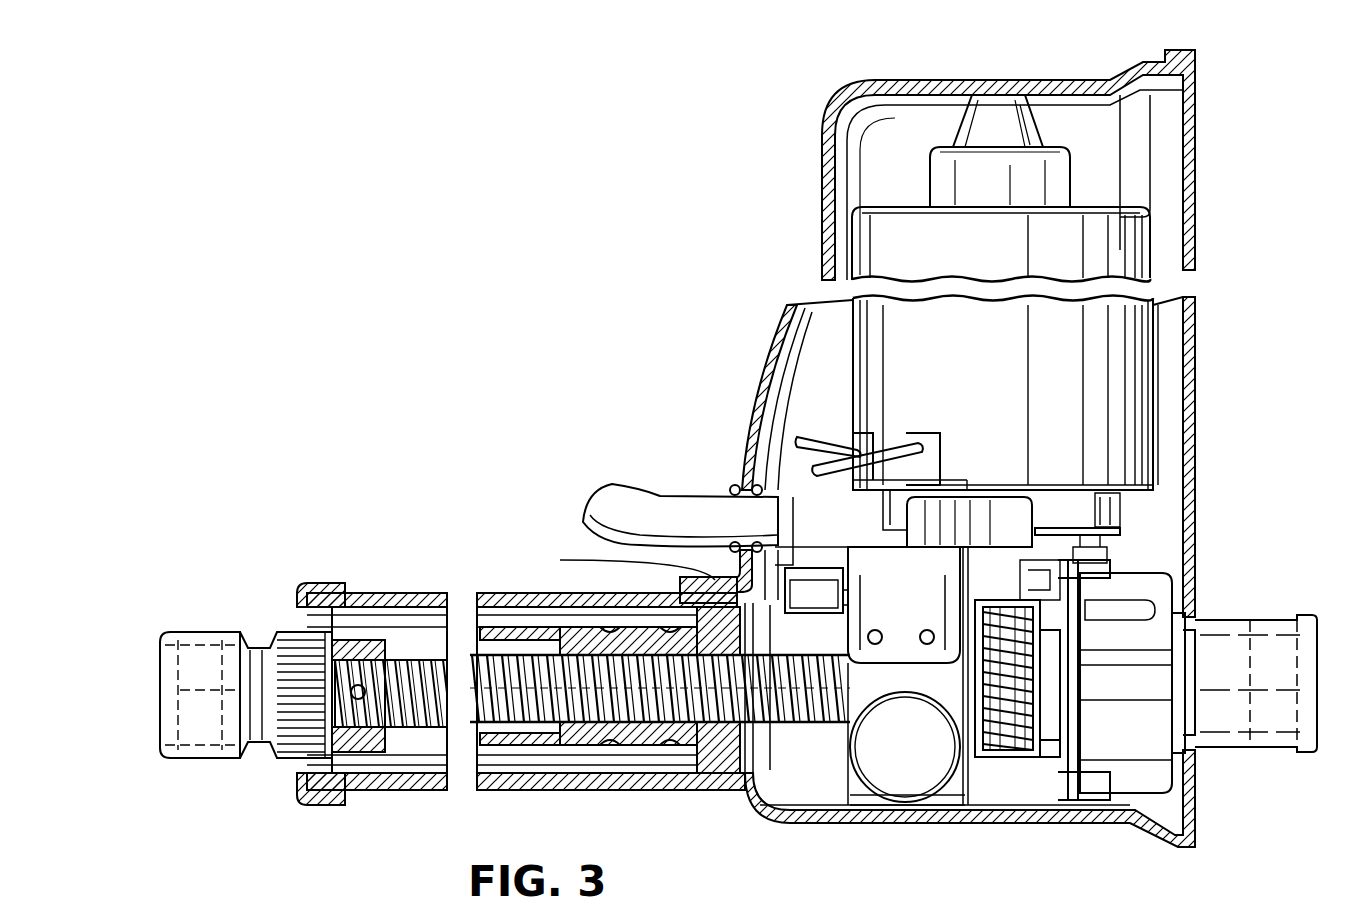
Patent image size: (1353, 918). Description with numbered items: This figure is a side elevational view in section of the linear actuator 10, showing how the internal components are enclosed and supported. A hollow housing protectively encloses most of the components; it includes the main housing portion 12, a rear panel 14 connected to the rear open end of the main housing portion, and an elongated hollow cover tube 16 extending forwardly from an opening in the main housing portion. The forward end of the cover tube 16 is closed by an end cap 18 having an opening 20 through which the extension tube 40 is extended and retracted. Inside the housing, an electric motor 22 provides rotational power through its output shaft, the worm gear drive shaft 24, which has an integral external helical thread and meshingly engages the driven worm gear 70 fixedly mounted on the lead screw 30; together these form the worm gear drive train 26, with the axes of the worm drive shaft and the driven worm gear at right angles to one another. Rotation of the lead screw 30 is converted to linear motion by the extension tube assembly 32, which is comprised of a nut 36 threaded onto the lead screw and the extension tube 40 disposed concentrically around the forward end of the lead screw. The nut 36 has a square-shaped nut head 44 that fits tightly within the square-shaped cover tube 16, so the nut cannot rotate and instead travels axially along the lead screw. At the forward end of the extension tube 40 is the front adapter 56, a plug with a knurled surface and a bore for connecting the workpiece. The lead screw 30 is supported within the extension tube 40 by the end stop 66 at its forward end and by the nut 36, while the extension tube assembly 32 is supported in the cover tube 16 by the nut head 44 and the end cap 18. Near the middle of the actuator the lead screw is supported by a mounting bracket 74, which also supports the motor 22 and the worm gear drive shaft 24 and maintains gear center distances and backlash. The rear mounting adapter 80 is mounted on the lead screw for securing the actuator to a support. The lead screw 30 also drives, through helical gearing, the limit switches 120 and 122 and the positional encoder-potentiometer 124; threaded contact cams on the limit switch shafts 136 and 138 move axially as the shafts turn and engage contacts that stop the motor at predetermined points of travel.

The linear actuator 10 is at (655, 220).
The main housing portion 12 is at (910, 80).
The rear panel 14 is at (1192, 137).
The electric motor 22 is at (1147, 345).
The lead screw 30 is at (782, 720).
The extension tube assembly 32 is at (155, 597).
The front adapter 56 is at (230, 760).
The opening 20 is at (290, 762).
The end cap 18 is at (315, 805).
The cover tube 16 is at (420, 795).
The end stop 66 is at (362, 752).
The extension tube 40 is at (520, 757).
The nut head 44 is at (713, 755).
The nut 36 is at (648, 755).
The mounting bracket 74 is at (857, 567).
The limit switch 120 is at (786, 615).
The limit switch shaft 138 is at (927, 630).
The limit switch shaft 136 is at (876, 644).
The positional encoder-potentiometer 124 is at (858, 800).
The driven worm gear 70 is at (978, 740).
The worm gear drive shaft 24 is at (1033, 748).
The worm gear drive train 26 is at (1040, 745).
The limit switch 122 is at (1020, 580).
The rear mounting adapter 80 is at (1228, 615).